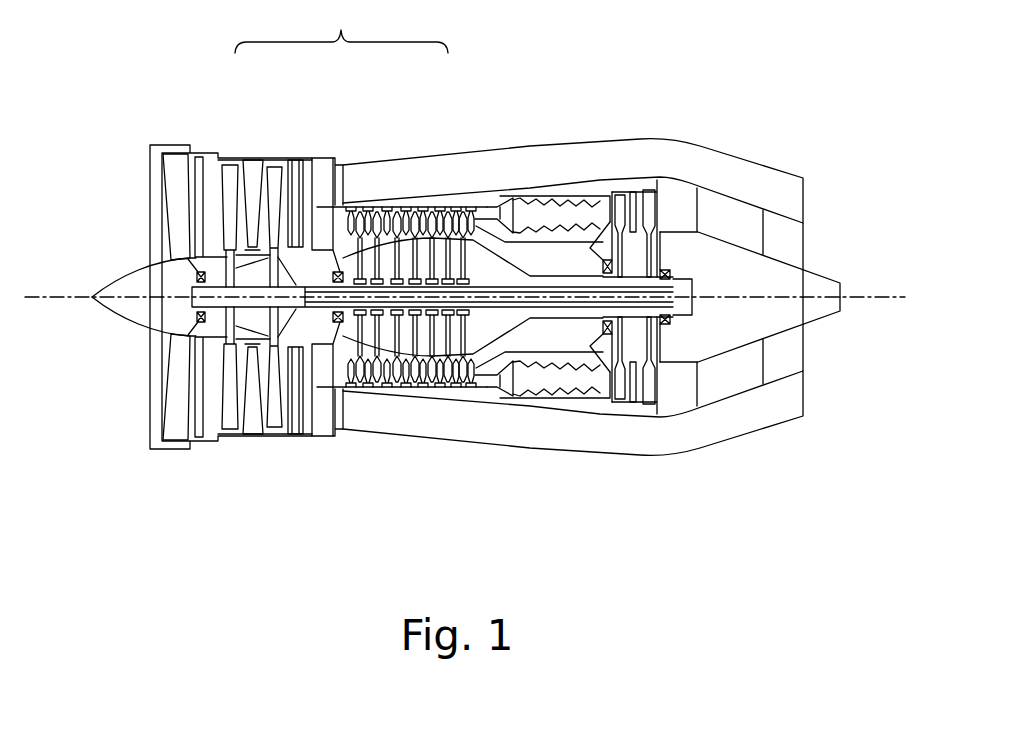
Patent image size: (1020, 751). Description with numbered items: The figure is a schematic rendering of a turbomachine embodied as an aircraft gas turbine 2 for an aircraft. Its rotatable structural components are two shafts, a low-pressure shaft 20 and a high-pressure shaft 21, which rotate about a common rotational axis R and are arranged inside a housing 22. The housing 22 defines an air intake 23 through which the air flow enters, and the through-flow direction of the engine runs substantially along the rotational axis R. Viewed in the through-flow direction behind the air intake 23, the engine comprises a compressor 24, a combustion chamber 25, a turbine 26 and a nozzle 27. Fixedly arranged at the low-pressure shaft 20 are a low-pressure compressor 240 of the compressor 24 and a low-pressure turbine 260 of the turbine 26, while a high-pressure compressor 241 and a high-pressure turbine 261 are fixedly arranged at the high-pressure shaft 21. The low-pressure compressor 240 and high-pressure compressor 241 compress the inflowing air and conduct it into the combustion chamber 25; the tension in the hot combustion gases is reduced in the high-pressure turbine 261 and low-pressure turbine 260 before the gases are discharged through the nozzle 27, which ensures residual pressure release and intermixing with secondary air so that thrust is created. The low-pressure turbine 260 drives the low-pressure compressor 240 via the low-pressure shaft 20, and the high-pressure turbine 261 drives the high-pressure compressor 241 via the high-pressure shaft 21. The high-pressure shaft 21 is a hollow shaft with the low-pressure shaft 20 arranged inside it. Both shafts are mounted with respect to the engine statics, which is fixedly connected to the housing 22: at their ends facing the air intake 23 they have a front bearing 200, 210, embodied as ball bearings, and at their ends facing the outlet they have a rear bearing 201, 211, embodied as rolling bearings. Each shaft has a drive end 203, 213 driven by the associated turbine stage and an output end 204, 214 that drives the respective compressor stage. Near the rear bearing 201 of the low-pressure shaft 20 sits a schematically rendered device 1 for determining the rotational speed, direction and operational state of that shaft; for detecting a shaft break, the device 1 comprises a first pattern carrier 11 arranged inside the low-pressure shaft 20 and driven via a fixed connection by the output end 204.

The device 1 is at (695, 260).
The aircraft gas turbine 2 is at (100, 84).
The first pattern carrier 11 is at (414, 290).
The low-pressure shaft 20 is at (510, 322).
The high-pressure shaft 21 is at (488, 212).
The housing 22 is at (498, 446).
The air intake 23 is at (113, 218).
The compressor 24 is at (341, 26).
The combustion chamber 25 is at (548, 390).
The turbine 26 is at (668, 93).
The nozzle 27 is at (845, 186).
The front bearing of the low-pressure shaft 200 is at (198, 318).
The rear bearing of the low-pressure shaft 201 is at (670, 326).
The drive end of the low-pressure shaft 203 is at (666, 345).
The output end of the low-pressure shaft 204 is at (271, 424).
The front bearing of the high-pressure shaft 210 is at (338, 323).
The rear bearing of the high-pressure shaft 211 is at (590, 343).
The drive end of the high-pressure shaft 213 is at (601, 246).
The output end of the high-pressure shaft 214 is at (344, 260).
The low-pressure compressor 240 is at (244, 124).
The high-pressure compressor 241 is at (400, 180).
The low-pressure turbine 260 is at (648, 410).
The high-pressure turbine 261 is at (617, 408).
The rotational axis R is at (63, 297).